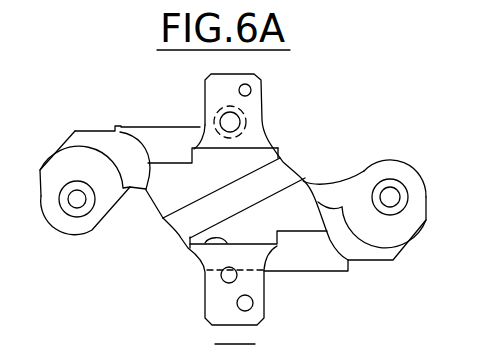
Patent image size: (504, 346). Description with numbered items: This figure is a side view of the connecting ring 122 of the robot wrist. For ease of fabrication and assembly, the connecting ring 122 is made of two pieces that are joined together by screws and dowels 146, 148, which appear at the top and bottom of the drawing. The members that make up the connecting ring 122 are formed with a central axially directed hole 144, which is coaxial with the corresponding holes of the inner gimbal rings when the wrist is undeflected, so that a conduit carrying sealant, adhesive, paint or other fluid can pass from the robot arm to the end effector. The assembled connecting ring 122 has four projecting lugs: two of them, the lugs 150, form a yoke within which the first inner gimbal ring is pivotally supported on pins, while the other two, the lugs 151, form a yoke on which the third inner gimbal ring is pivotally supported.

The connecting ring 122 is at (322, 142).
The central axially directed hole 144 is at (197, 249).
The screws and dowels 146 is at (224, 281).
The screws and dowels 148 is at (225, 116).
The projecting lugs 150 is at (91, 231).
The projecting lugs 151 is at (410, 166).